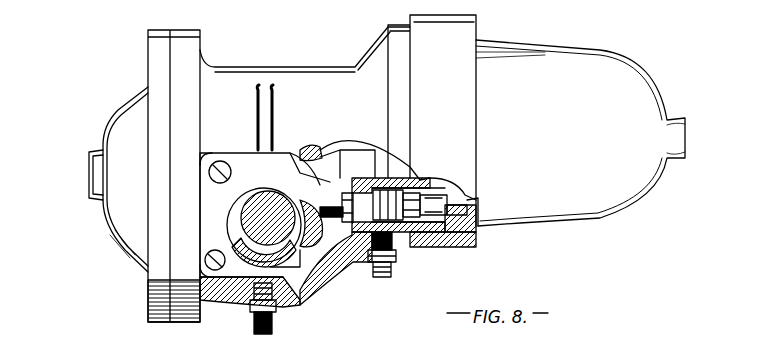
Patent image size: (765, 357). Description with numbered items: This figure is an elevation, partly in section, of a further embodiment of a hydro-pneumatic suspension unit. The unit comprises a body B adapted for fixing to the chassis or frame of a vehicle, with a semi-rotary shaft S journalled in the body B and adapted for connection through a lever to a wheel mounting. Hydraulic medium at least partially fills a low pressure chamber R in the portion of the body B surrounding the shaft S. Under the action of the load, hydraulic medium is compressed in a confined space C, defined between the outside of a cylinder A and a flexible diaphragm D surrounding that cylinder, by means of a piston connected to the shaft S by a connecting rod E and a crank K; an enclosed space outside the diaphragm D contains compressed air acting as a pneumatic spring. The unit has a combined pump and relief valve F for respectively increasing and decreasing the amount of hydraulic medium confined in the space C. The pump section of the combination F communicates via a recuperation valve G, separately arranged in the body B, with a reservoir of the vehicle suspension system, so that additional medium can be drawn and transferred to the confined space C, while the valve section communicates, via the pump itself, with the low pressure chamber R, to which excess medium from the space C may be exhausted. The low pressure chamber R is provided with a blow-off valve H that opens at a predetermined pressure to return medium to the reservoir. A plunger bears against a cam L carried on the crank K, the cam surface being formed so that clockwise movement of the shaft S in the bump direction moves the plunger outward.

The cylinder A is at (407, 175).
The body B is at (338, 258).
The confined space C is at (474, 198).
The flexible diaphragm D is at (457, 205).
The connecting rod E is at (355, 148).
The combined pump and relief valve F is at (388, 203).
The recuperation valve G is at (396, 263).
The blow-off valve H is at (252, 316).
The crank K is at (275, 250).
The cam L is at (315, 256).
The low pressure chamber R is at (228, 273).
The semi-rotary shaft S is at (250, 233).